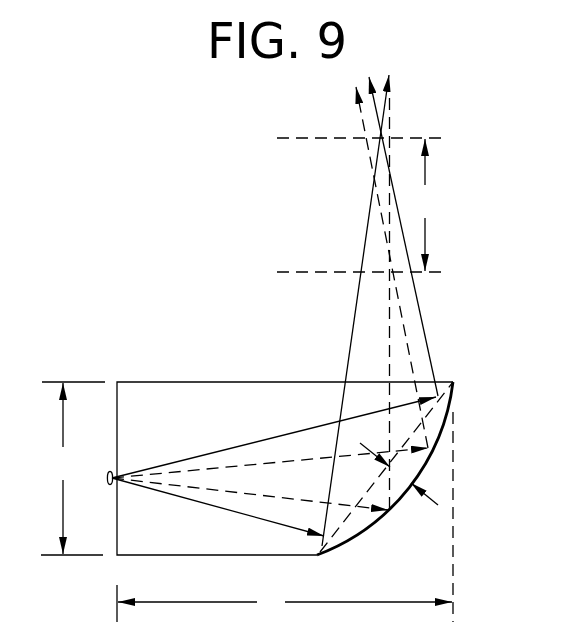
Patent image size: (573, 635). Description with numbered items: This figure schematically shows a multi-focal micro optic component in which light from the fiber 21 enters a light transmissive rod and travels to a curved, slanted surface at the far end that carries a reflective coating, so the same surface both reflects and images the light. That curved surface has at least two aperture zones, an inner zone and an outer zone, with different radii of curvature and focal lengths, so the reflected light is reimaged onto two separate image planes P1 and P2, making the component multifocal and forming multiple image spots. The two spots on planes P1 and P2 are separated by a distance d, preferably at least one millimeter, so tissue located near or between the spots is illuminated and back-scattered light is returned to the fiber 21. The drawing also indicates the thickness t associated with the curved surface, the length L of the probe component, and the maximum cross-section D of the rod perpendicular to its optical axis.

The fiber 21 is at (108, 487).
The maximum cross-section D is at (73, 468).
The length L is at (285, 517).
The distance d is at (425, 205).
The thickness t is at (398, 474).
The image plane P1 is at (381, 276).
The image plane P2 is at (381, 145).